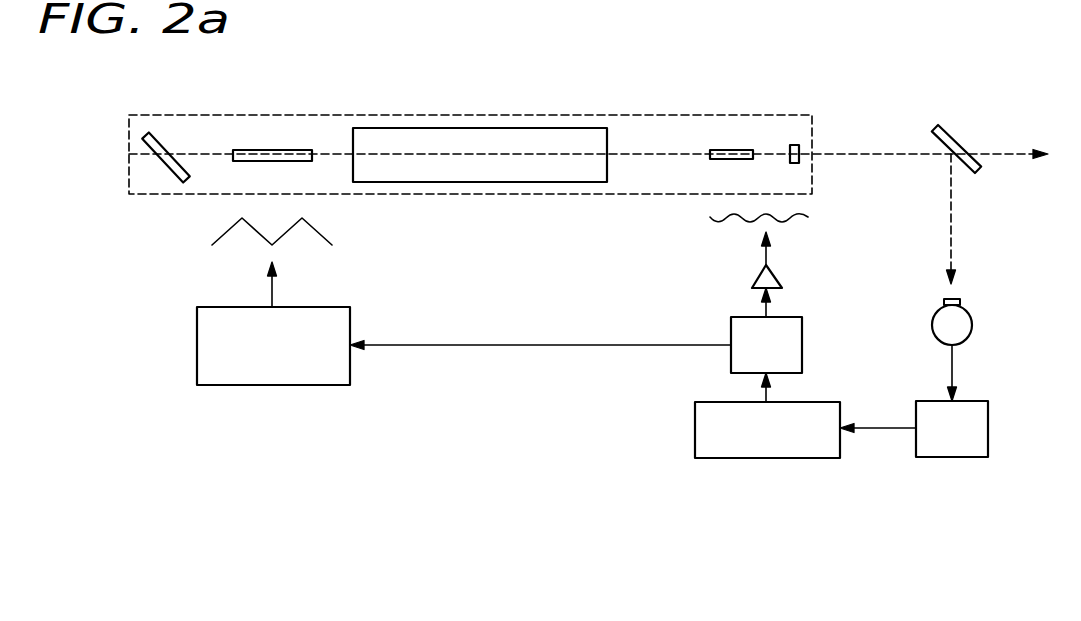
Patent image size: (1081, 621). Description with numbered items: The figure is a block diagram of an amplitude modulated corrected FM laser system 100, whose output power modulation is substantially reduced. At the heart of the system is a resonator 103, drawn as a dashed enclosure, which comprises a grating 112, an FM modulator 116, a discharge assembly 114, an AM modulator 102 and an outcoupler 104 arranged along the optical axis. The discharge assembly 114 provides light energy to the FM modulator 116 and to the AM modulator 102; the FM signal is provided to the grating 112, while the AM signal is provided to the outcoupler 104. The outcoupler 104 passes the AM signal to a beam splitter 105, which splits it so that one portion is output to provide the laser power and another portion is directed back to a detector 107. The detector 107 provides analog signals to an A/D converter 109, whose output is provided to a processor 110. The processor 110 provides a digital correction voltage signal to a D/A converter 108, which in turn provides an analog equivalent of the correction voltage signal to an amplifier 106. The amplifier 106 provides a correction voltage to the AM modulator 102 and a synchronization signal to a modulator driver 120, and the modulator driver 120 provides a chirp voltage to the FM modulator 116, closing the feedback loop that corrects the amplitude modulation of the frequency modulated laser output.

The AM corrected FM laser system 100 is at (500, 386).
The AM modulator 102 is at (715, 150).
The resonator 103 is at (558, 115).
The outcoupler 104 is at (795, 163).
The beam splitter 105 is at (978, 172).
The amplifier 106 is at (776, 274).
The detector 107 is at (946, 302).
The D/A converter 108 is at (731, 333).
The A/D converter 109 is at (988, 418).
The processor 110 is at (695, 420).
The grating 112 is at (140, 138).
The discharge assembly 114 is at (448, 128).
The FM modulator 116 is at (262, 150).
The modulator driver 120 is at (197, 345).